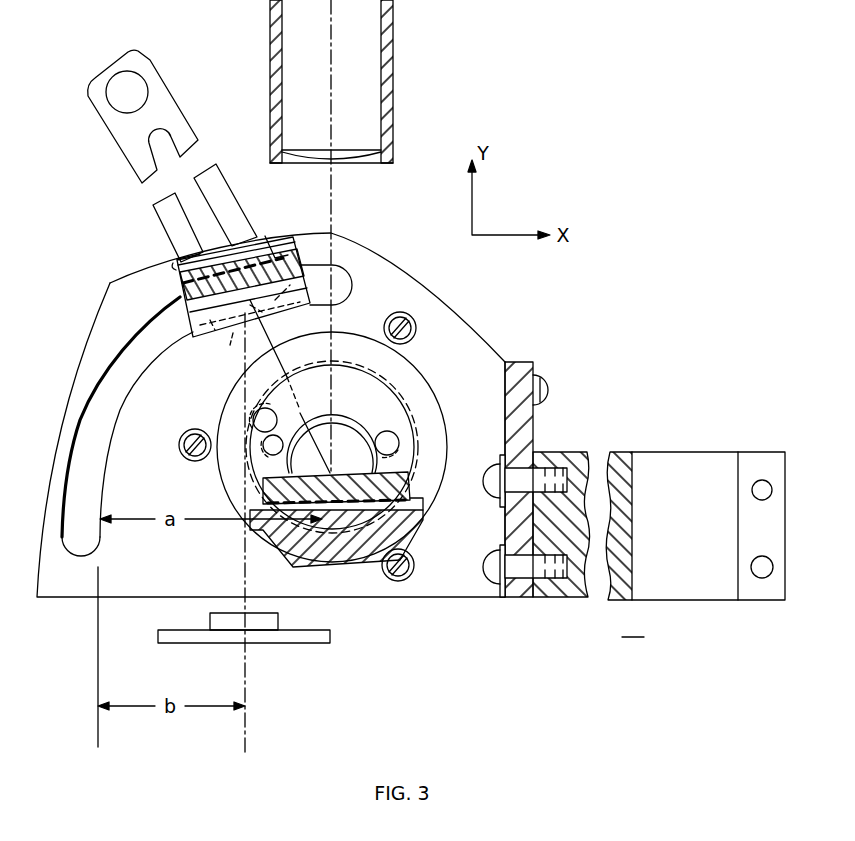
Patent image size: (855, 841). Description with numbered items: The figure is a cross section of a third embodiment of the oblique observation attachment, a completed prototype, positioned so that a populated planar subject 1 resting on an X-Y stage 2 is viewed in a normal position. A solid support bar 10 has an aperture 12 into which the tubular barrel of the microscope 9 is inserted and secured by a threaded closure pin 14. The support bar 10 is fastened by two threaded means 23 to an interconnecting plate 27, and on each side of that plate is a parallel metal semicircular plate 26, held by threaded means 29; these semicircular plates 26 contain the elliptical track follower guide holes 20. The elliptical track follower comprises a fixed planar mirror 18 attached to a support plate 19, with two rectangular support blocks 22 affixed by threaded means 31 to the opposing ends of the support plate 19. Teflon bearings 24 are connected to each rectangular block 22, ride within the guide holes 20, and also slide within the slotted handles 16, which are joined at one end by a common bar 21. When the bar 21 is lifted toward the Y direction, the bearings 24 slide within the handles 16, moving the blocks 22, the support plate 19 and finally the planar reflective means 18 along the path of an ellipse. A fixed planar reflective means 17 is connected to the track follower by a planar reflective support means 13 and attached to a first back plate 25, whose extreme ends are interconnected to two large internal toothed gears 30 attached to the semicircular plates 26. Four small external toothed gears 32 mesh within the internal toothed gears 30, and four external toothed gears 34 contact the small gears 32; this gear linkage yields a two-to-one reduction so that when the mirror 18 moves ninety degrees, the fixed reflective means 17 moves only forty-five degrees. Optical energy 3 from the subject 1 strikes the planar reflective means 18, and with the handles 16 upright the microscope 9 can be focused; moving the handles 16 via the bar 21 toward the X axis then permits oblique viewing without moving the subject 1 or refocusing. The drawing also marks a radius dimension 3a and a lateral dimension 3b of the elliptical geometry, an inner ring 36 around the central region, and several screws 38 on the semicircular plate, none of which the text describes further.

The populated planar subject 1 is at (278, 622).
The X-Y stage 2 is at (310, 643).
The optical energy 3 is at (243, 543).
The rotary disc 3a is at (285, 376).
The slot in housing 3b is at (330, 250).
The microscope 9 is at (370, 52).
The solid support bar 10 is at (622, 452).
The aperture 12 is at (738, 460).
The planar reflective support means 13 is at (340, 568).
The threaded closure pin 14 is at (760, 492).
The slotted handles 16 is at (182, 107).
The fixed planar reflective means 17 is at (340, 473).
The planar reflective means 18 is at (268, 242).
The support plate 19 is at (175, 266).
The elliptical track follower guide holes 20 is at (133, 343).
The common bar 21 is at (126, 103).
The rectangular support blocks 22 is at (178, 286).
The threaded means 23 is at (540, 580).
The teflon bearings 24 is at (233, 334).
The first back plate 25 is at (407, 515).
The semicircular plate 26 is at (460, 318).
The interconnecting plate 27 is at (515, 363).
The threaded means 29 is at (549, 378).
The large internal toothed gears 30 is at (383, 383).
The threaded means 31 is at (183, 262).
The small external toothed gears 32 is at (253, 420).
The external toothed gears 34 is at (276, 446).
The inner ring 36 is at (350, 420).
The screws 38 is at (414, 568).